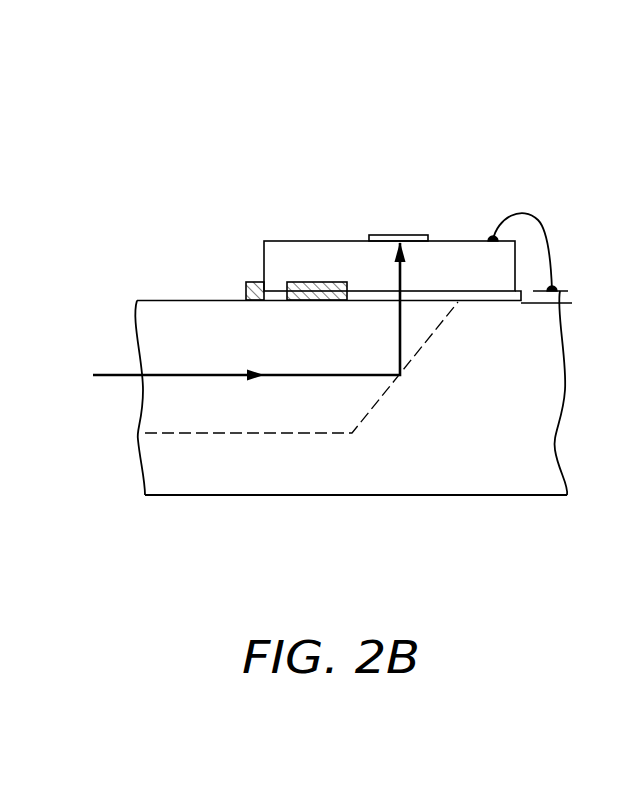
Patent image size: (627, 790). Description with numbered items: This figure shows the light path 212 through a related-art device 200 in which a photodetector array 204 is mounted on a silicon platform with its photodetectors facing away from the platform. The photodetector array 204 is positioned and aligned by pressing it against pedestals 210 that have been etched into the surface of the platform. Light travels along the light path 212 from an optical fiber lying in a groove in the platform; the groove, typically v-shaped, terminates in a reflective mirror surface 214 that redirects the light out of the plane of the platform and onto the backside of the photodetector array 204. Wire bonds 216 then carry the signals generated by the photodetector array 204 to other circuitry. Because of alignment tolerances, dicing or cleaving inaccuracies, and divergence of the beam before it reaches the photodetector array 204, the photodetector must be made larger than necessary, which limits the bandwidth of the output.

The device 200 is at (440, 143).
The photodetector array 204 is at (390, 235).
The pedestals 210 is at (310, 282).
The light path 212 is at (177, 373).
The reflective mirror surfaces 214 is at (425, 343).
The wire bonds 216 is at (533, 213).